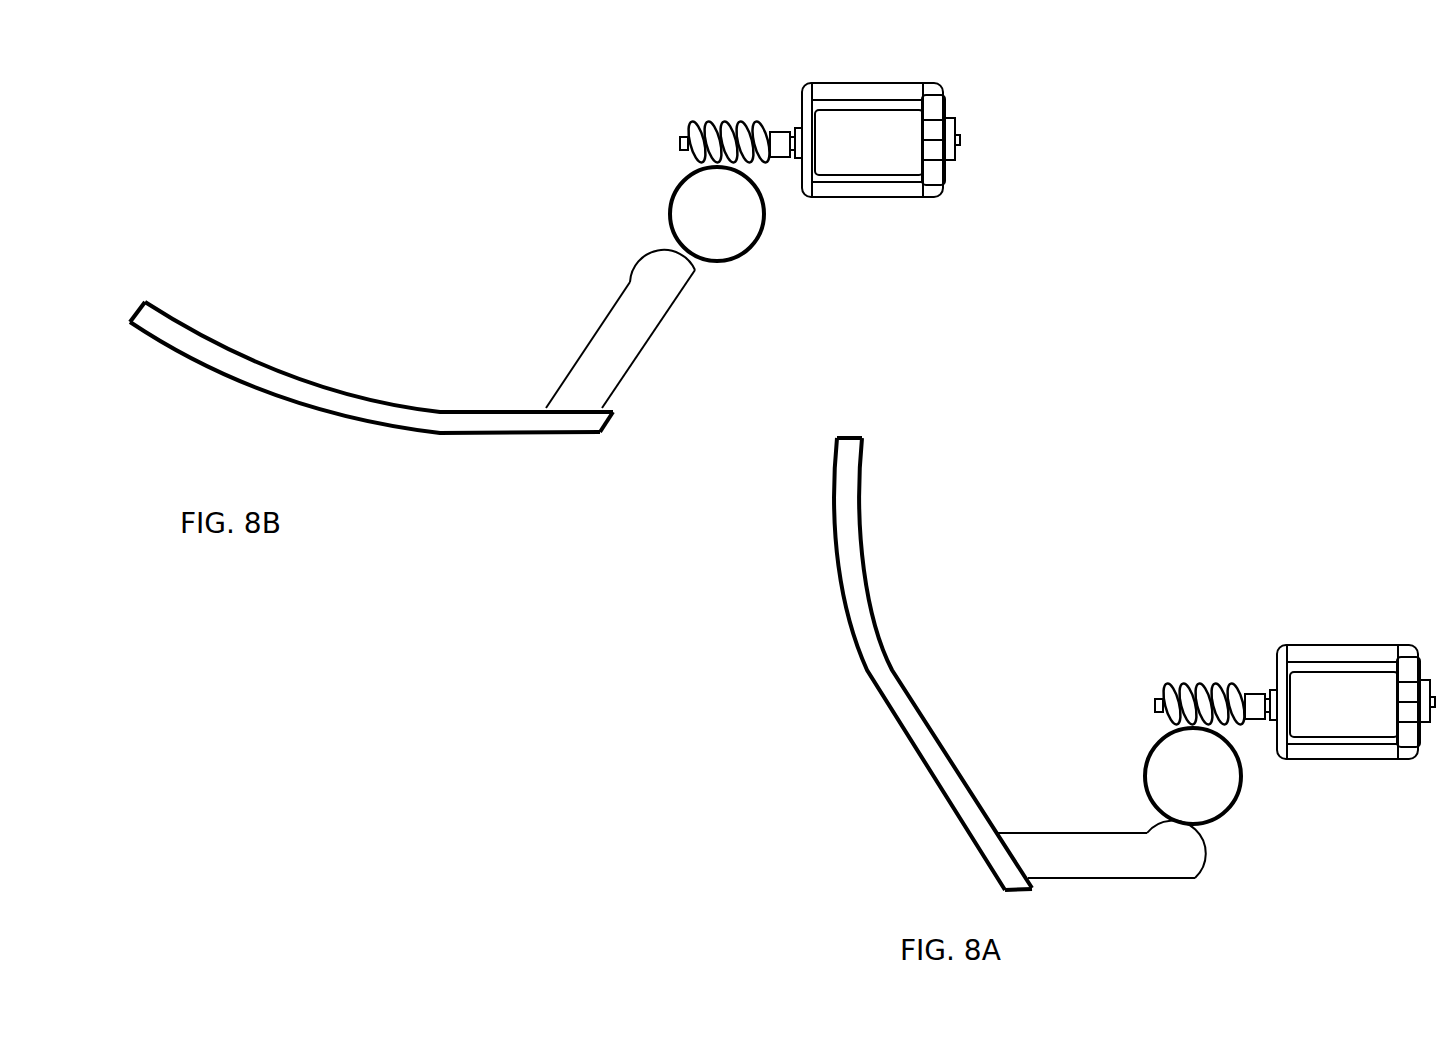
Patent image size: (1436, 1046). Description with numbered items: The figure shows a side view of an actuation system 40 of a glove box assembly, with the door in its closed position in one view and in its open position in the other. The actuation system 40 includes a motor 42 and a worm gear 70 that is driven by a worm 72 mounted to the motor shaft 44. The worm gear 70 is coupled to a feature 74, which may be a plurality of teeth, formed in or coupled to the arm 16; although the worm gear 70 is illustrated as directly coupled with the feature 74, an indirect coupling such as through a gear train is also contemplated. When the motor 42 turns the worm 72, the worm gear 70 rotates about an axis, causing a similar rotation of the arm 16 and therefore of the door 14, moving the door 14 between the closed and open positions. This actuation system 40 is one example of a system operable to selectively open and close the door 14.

In FIG. 8B, the door 14 is at (347, 415).
In FIG. 8A, the door 14 is at (857, 632).
In FIG. 8B, the arm 16 is at (608, 363).
In FIG. 8A, the arm 16 is at (1047, 840).
In FIG. 8B, the actuation system 40 is at (558, 133).
In FIG. 8A, the actuation system 40 is at (1241, 598).
In FIG. 8B, the motor 42 is at (887, 160).
In FIG. 8A, the motor 42 is at (1348, 678).
In FIG. 8B, the motor shaft 44 is at (680, 145).
In FIG. 8A, the motor shaft 44 is at (1155, 707).
In FIG. 8B, the worm gear 70 is at (732, 222).
In FIG. 8A, the worm gear 70 is at (1220, 790).
In FIG. 8B, the worm 72 is at (735, 130).
In FIG. 8A, the worm 72 is at (1183, 698).
In FIG. 8B, the feature 74 is at (650, 245).
In FIG. 8A, the feature 74 is at (1202, 853).